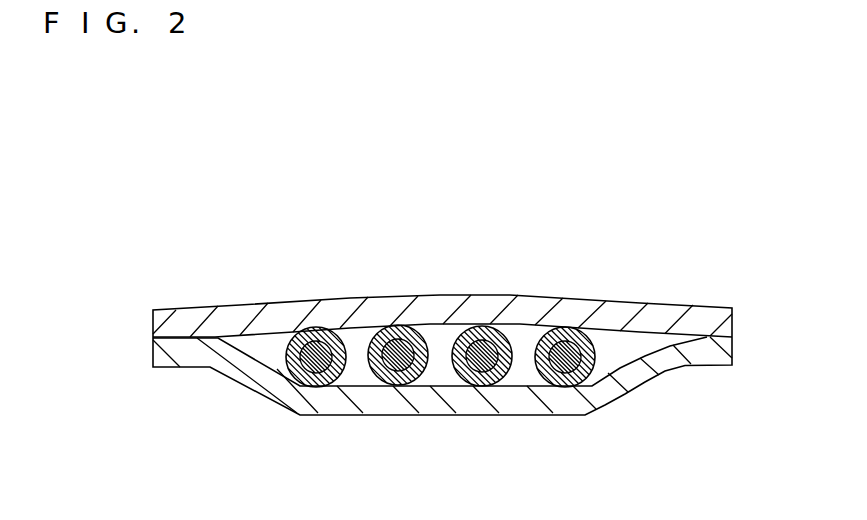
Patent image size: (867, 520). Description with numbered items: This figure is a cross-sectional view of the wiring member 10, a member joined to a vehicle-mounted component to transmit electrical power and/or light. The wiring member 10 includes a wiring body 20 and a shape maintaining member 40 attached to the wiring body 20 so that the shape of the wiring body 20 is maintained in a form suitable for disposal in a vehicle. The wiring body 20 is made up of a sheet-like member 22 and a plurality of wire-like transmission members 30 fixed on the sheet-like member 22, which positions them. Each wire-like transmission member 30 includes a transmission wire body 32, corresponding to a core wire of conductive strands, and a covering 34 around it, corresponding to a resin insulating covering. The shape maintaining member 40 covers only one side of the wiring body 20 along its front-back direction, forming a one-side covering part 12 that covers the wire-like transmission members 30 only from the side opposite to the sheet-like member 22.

The wiring member 10 is at (163, 157).
The one-side covering part 12 is at (265, 302).
The shape maintaining member 40 is at (526, 310).
The wiring body 20 is at (537, 440).
The sheet-like member 22 is at (481, 387).
The wire-like transmission member 30 is at (412, 438).
The transmission wire body 32 is at (389, 370).
The covering 34 is at (380, 382).